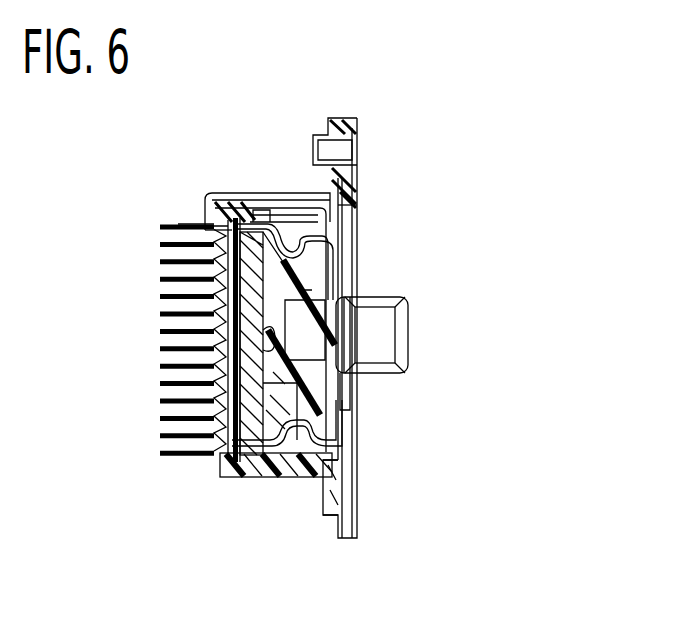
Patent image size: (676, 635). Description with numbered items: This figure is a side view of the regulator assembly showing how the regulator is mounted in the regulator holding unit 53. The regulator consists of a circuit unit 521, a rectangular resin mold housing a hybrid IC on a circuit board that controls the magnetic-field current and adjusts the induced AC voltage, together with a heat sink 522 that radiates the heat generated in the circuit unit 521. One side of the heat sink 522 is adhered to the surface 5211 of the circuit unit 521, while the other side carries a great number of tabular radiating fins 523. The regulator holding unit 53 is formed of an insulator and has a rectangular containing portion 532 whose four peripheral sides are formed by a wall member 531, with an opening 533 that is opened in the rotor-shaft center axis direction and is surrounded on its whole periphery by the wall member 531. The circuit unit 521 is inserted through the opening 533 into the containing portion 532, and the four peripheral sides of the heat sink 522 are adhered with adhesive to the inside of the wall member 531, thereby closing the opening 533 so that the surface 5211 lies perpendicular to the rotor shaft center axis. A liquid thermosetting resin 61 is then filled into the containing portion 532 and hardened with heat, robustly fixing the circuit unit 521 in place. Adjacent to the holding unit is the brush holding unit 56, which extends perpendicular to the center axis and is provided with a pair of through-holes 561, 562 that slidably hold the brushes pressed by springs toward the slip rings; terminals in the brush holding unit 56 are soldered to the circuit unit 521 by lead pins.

The circuit unit 521 is at (250, 215).
The surface of the circuit unit 5211 is at (240, 440).
The heat sink 522 is at (222, 455).
The tabular radiating fins 523 is at (158, 386).
The opening 533 is at (188, 226).
The thermosetting resin 61 is at (345, 234).
The brush holding unit 56 is at (416, 315).
The through-hole 561 is at (313, 338).
The through-hole 562 is at (382, 333).
The regulator holding unit 53 is at (238, 478).
The wall member 531 is at (275, 478).
The containing portion 532 is at (290, 438).